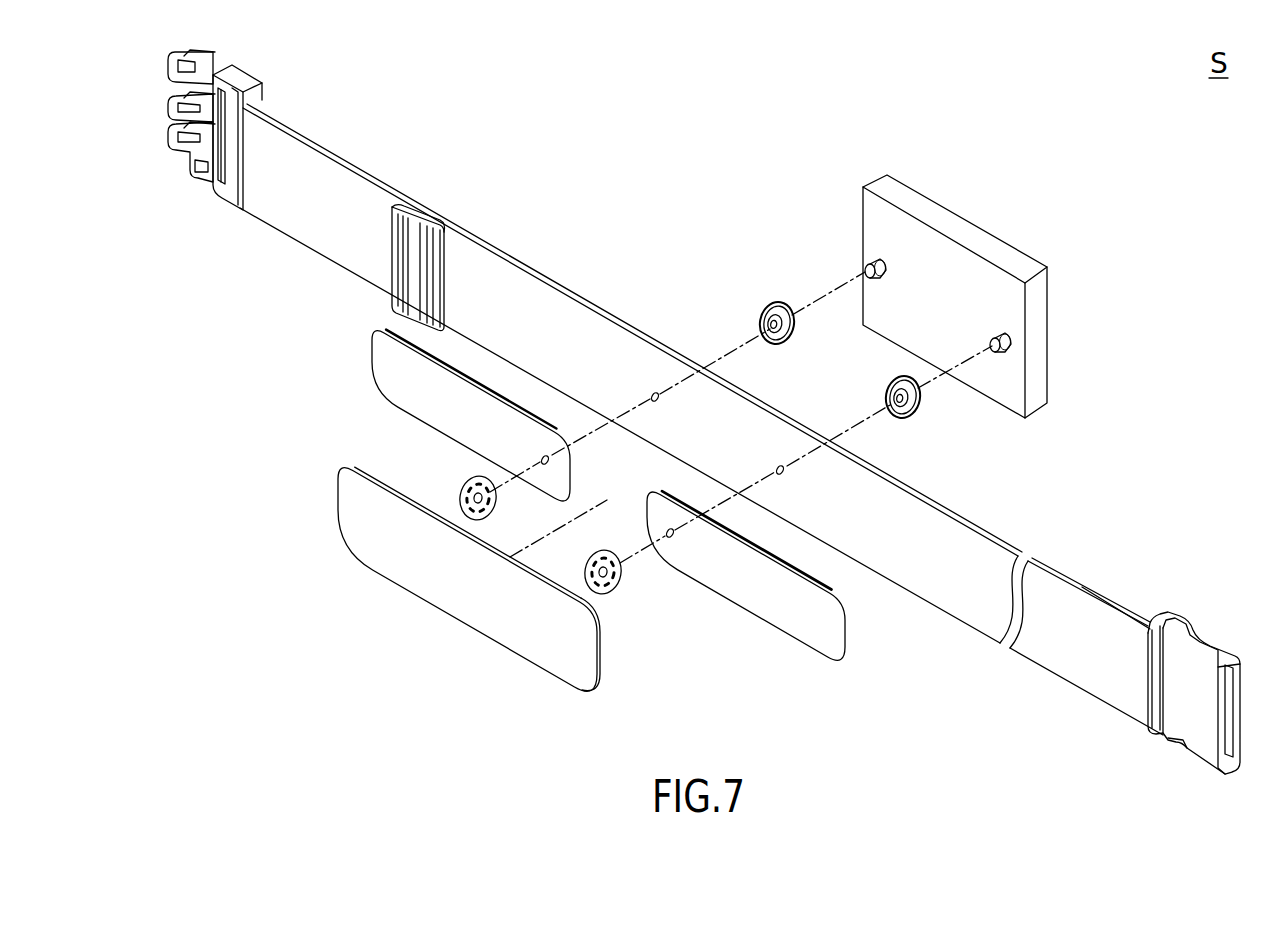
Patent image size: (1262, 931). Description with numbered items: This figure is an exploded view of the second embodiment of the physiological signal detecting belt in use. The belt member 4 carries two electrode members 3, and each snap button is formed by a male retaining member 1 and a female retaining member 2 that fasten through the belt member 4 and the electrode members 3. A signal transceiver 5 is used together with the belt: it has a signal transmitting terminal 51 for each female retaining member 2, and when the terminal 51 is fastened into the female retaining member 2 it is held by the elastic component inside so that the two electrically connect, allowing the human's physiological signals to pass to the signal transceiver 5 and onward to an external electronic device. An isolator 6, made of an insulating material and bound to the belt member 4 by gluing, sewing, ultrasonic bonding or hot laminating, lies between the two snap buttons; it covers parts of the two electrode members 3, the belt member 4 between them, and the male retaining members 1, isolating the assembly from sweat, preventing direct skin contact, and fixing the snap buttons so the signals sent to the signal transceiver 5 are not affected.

The male retaining member 1 is at (624, 590).
The female retaining member 2 is at (925, 418).
The electrode member 3 is at (848, 635).
The belt member 4 is at (987, 530).
The signal transceiver 5 is at (986, 296).
The signal transmitting terminal 51 is at (1011, 344).
The isolator 6 is at (529, 663).